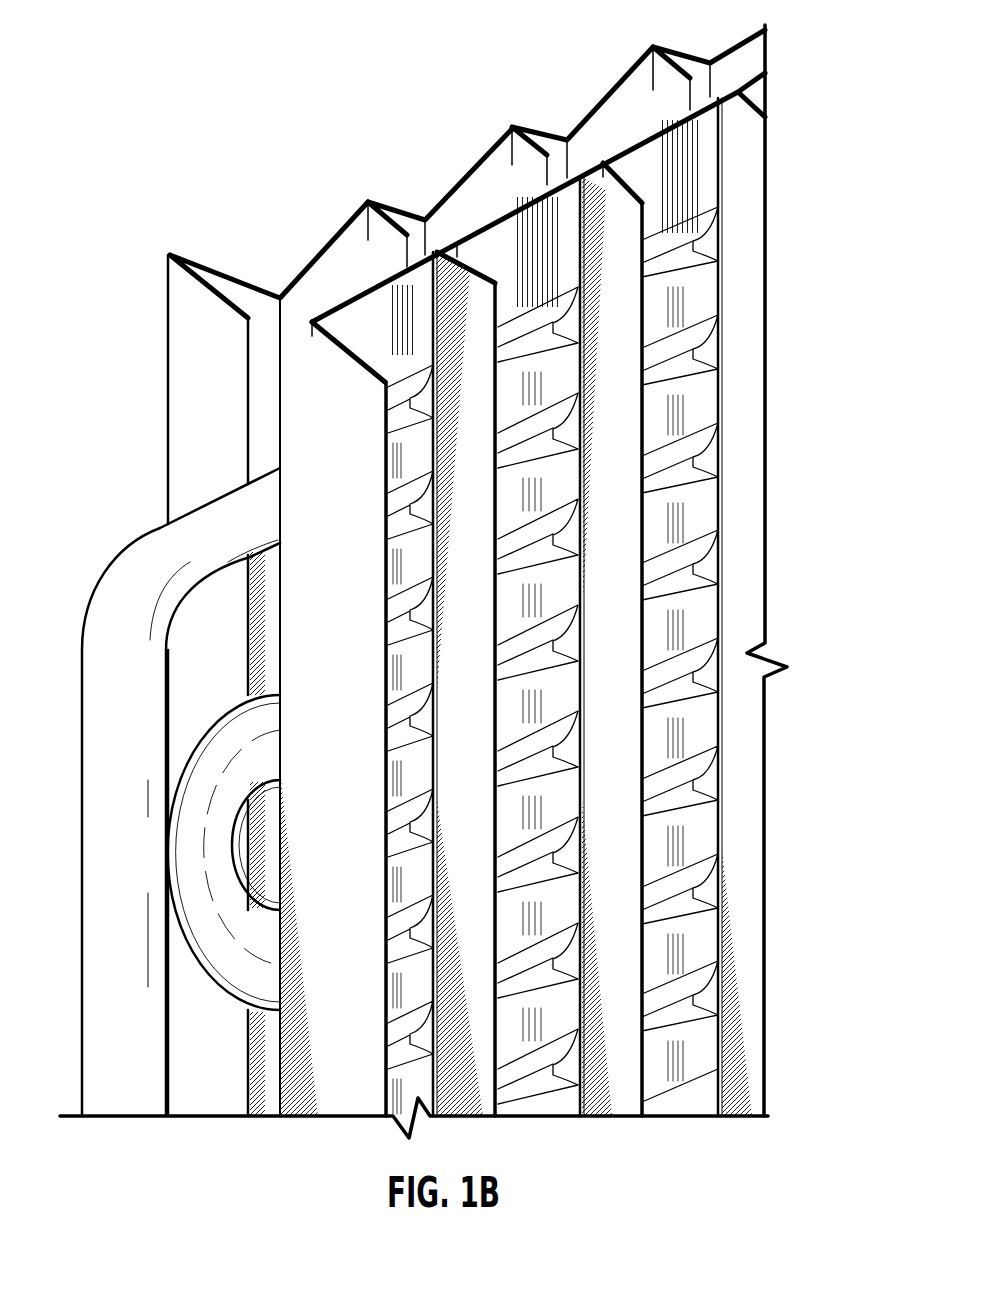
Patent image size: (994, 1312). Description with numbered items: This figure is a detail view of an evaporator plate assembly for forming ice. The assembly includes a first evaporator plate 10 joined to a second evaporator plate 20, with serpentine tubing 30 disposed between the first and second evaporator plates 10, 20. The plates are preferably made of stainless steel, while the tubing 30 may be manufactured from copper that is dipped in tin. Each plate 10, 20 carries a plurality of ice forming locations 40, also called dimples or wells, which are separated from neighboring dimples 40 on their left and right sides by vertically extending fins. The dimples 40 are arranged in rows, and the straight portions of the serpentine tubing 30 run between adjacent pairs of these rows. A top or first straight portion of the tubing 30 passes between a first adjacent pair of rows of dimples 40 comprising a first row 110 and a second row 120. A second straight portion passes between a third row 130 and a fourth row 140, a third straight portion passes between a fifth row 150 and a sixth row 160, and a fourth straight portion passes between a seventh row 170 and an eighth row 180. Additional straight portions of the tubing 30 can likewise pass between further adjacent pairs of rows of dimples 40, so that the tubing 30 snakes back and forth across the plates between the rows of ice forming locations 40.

The first evaporator plate 10 is at (335, 1085).
The second evaporator plate 20 is at (185, 345).
The serpentine tubing 30 is at (120, 612).
The ice forming locations 40 is at (548, 1100).
The first row 110 is at (708, 248).
The second row 120 is at (708, 348).
The third row 130 is at (708, 468).
The fourth row 140 is at (708, 566).
The fifth row 150 is at (708, 678).
The sixth row 160 is at (708, 778).
The seventh row 170 is at (708, 896).
The eighth row 180 is at (708, 993).